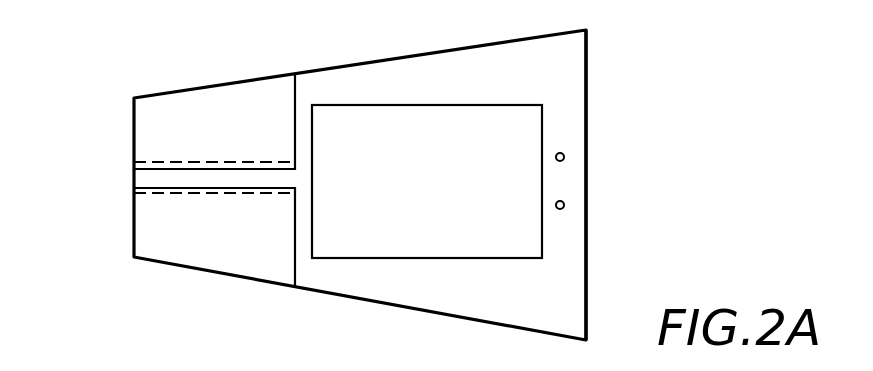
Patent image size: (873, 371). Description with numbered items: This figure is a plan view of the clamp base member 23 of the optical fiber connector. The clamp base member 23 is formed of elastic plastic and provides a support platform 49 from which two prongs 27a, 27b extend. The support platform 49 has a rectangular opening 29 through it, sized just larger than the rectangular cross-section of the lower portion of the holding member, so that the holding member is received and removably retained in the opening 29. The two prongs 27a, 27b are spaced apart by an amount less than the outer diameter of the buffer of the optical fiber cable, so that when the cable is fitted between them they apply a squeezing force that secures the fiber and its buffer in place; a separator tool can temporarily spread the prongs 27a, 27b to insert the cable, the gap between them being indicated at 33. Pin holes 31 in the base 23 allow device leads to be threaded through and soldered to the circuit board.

The clamp base member 23 is at (80, 82).
The prong 27a is at (220, 133).
The prong 27b is at (219, 243).
The opening 29 is at (383, 248).
The pin holes 31 is at (564, 158).
The slot between fin sections 33 is at (143, 177).
The support platform 49 is at (586, 293).